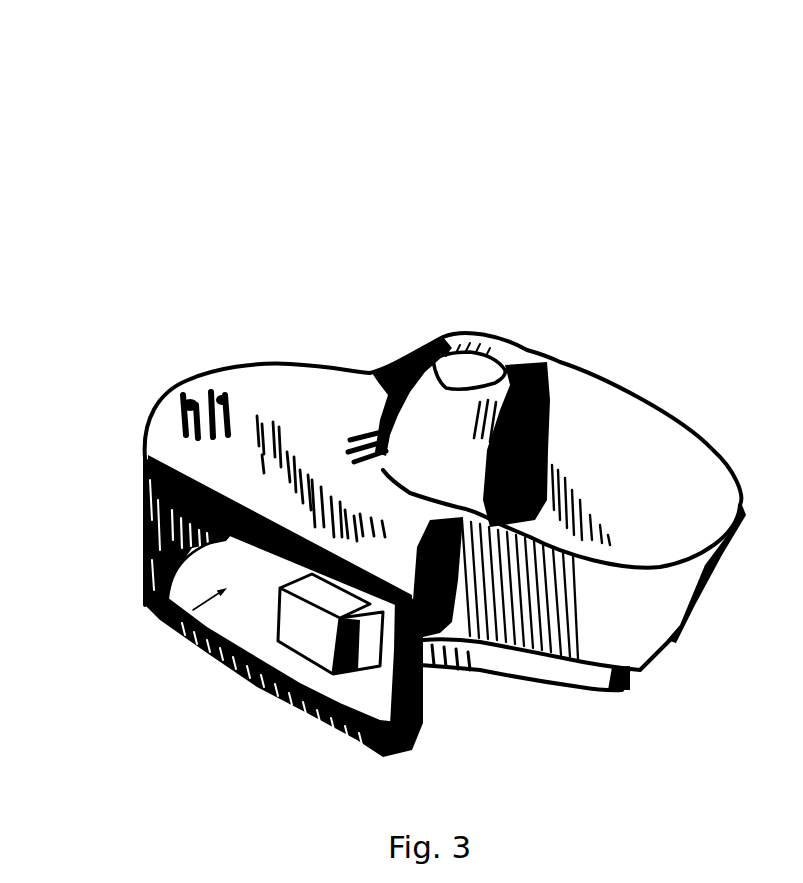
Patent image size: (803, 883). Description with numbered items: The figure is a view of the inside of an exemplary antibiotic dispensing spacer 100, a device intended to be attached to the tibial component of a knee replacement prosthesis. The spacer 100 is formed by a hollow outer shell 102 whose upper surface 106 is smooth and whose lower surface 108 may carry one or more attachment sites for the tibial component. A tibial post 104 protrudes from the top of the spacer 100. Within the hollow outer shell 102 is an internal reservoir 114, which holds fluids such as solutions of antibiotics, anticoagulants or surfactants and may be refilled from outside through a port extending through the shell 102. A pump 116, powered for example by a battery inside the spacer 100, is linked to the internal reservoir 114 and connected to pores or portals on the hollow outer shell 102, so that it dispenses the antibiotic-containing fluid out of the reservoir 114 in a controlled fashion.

The antibiotic dispensing spacer 100 is at (385, 414).
The hollow outer shell 102 is at (226, 357).
The tibial post 104 is at (513, 370).
The upper surface 106 is at (178, 455).
The lower surface 108 is at (545, 672).
The internal reservoir 114 is at (160, 627).
The pump 116 is at (315, 630).